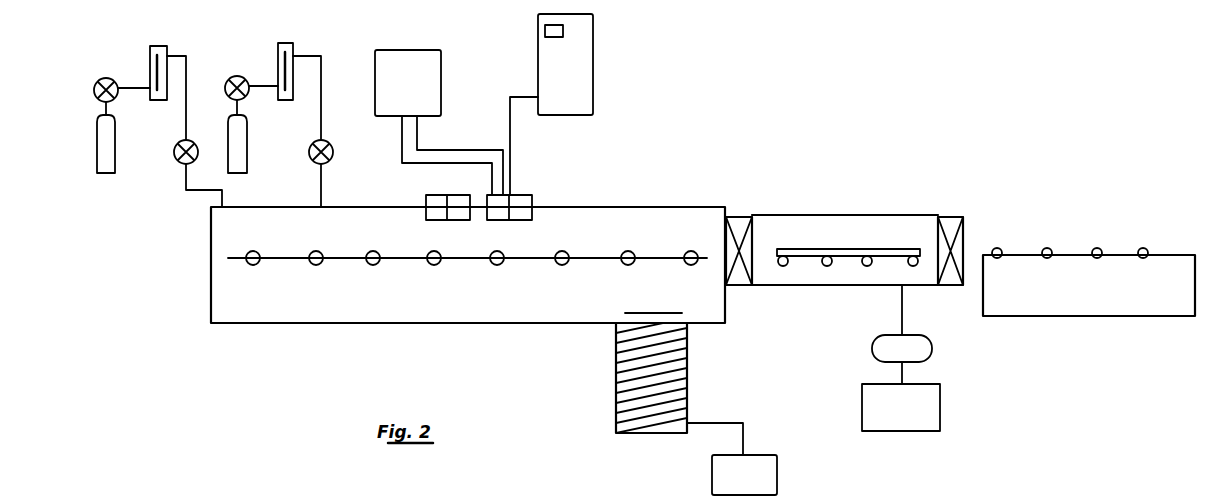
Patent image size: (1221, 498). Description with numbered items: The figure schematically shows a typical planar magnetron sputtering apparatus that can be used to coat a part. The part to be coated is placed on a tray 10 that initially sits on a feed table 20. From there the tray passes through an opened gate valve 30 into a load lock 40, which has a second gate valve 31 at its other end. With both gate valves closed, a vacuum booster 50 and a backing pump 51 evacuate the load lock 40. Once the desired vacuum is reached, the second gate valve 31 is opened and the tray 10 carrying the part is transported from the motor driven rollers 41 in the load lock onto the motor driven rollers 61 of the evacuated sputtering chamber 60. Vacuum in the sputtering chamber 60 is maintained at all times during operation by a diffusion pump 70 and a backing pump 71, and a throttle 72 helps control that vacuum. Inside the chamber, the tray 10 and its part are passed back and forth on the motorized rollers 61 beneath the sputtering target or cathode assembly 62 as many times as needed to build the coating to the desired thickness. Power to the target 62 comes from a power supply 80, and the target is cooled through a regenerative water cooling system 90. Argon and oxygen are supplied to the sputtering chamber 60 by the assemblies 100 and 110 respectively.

The tray 10 is at (855, 249).
The feed table 20 is at (1165, 257).
The gate valve 30 is at (950, 217).
The second gate valve 31 is at (742, 217).
The load lock 40 is at (833, 215).
The motor driven rollers 41 is at (785, 266).
The vacuum booster 50 is at (922, 348).
The backing pump 51 is at (925, 405).
The sputtering chamber 60 is at (373, 328).
The motor driven rollers 61 is at (255, 265).
The cathode assembly 62 is at (525, 195).
The diffusion pump 70 is at (677, 363).
The backing pump 71 is at (767, 462).
The throttle 72 is at (637, 308).
The power supply 80 is at (576, 70).
The regenerative water cooling system 90 is at (418, 90).
The argon supply assembly 100 is at (191, 49).
The oxygen supply assembly 110 is at (318, 46).